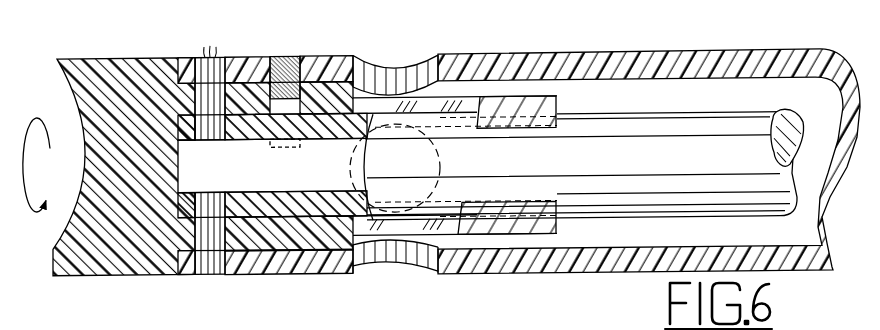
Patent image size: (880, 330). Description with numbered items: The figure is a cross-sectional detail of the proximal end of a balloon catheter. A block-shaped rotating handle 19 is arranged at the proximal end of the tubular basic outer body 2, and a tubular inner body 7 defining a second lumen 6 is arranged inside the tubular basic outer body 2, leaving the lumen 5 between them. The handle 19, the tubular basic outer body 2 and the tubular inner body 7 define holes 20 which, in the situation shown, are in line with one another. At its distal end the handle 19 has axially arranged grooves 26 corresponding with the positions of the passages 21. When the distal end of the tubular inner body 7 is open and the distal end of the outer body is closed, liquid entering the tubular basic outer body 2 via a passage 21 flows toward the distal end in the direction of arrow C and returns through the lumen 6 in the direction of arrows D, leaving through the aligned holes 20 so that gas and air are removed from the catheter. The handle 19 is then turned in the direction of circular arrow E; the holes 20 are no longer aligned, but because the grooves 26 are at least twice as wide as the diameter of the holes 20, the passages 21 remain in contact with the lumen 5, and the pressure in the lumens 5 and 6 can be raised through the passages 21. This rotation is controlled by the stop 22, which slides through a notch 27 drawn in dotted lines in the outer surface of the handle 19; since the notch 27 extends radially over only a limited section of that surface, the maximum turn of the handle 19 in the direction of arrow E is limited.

The tubular basic outer body 2 is at (588, 58).
The lumen 5 is at (657, 99).
The second lumen 6 is at (791, 166).
The tubular inner body 7 is at (724, 128).
The rotating handle 19 is at (131, 60).
The holes 20 is at (224, 60).
The passages 21 is at (374, 76).
The stop 22 is at (284, 59).
The grooves 26 is at (520, 112).
The notch 27 is at (303, 163).
The arrow C is at (452, 104).
The arrows D is at (382, 172).
The circular arrow E is at (36, 149).